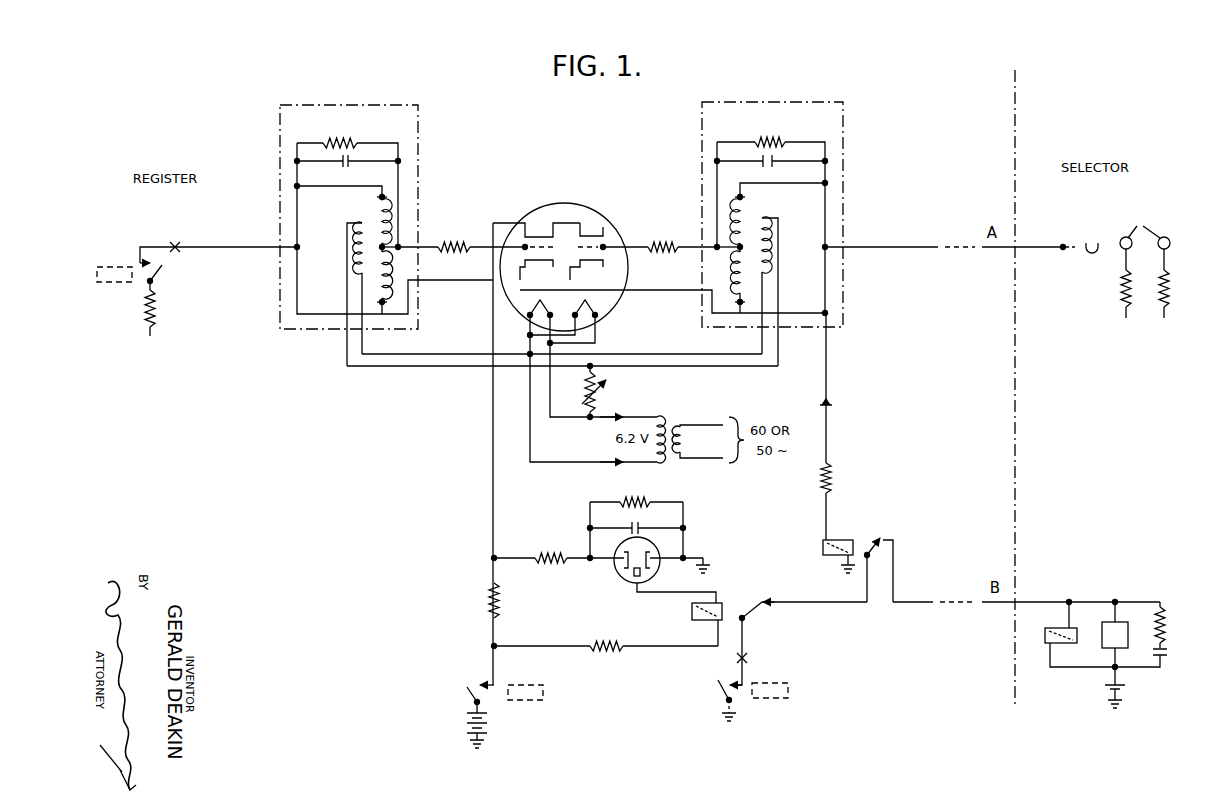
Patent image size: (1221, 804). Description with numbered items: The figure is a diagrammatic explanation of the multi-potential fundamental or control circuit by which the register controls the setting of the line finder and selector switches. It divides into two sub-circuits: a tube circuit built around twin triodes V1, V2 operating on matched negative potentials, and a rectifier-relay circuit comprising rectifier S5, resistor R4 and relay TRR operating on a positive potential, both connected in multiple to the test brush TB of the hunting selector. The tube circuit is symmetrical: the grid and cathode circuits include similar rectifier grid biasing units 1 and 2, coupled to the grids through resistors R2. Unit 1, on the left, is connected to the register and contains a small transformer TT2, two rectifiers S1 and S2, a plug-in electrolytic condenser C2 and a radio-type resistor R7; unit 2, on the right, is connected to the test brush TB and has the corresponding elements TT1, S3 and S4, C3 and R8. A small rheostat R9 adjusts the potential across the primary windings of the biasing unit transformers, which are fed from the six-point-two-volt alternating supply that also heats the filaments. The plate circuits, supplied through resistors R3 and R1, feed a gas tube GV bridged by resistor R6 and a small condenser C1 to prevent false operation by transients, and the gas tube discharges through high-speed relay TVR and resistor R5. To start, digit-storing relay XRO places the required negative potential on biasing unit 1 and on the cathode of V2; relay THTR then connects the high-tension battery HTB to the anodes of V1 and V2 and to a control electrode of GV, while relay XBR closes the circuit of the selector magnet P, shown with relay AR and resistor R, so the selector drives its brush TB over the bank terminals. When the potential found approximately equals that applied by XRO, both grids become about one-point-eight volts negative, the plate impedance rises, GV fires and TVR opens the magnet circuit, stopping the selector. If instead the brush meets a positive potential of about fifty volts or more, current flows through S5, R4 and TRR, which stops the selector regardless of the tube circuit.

The rectifier grid biasing unit 1 is at (412, 158).
The rectifier grid biasing unit 2 is at (837, 143).
The radio-type resistor R7 is at (343, 129).
The plug-in electrolytic condenser C2 is at (347, 164).
The transformer TT2 is at (351, 282).
The rectifier S1 is at (371, 197).
The rectifier S2 is at (392, 302).
The radio-type resistor R8 is at (773, 126).
The electrolytic condenser C3 is at (771, 164).
The transformer TT1 is at (768, 282).
The rectifier S3 is at (751, 193).
The rectifier S4 is at (732, 302).
The digit-storing relay XRO is at (197, 311).
The radio-type resistor R2 is at (557, 245).
The triode V1 is at (560, 257).
The triode V2 is at (588, 250).
The rheostat R9 is at (599, 393).
The resistor R6 is at (640, 504).
The condenser C1 is at (637, 533).
The radio-type resistor R1 is at (559, 558).
The gas tube GV is at (621, 572).
The high-speed relay TVR is at (707, 617).
The radio-type resistor R5 is at (606, 644).
The radio-type resistor R3 is at (472, 600).
The relay THTR is at (505, 689).
The direct-current source HTB is at (442, 725).
The rectifier S5 is at (837, 405).
The radio-type resistor R4 is at (841, 478).
The rectifier-relay TRR is at (844, 563).
The relay XBR is at (753, 661).
The test brush TB is at (1134, 286).
The relay AR is at (1061, 622).
The selector magnet P is at (1099, 655).
The resistor R is at (1167, 628).